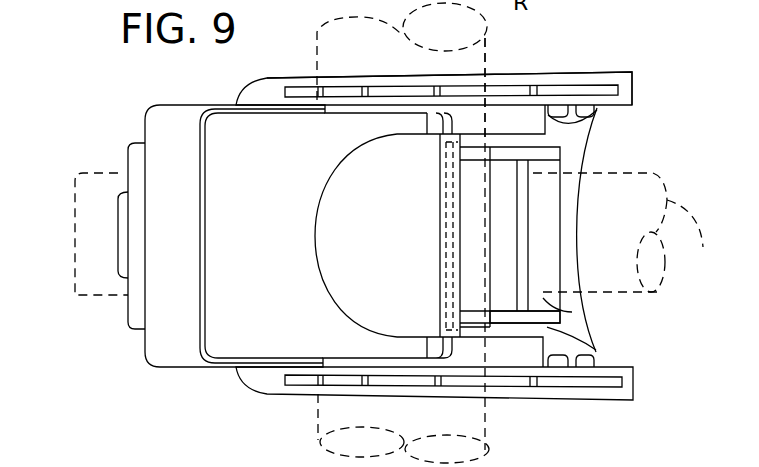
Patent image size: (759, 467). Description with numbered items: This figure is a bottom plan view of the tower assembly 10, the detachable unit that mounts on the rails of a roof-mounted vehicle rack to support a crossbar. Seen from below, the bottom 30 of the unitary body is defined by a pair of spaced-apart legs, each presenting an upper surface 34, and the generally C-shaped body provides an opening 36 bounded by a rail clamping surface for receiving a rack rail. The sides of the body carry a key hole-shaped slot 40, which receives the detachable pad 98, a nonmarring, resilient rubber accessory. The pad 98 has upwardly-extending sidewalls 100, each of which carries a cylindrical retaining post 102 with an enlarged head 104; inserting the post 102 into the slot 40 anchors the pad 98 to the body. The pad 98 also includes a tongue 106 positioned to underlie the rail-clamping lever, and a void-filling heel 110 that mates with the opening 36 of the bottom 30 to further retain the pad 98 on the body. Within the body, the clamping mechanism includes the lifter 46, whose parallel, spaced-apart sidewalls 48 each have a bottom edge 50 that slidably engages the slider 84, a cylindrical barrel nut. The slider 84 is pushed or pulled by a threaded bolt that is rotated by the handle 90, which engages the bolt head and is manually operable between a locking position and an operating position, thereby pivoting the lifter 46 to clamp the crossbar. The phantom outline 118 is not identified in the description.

The tower assembly 10 is at (103, 105).
The bottom 30 is at (272, 243).
The upper surface 34 is at (390, 125).
The opening 36 is at (317, 260).
The key hole-shaped slot 40 is at (563, 360).
The lifter 46 is at (461, 310).
The sidewalls 48 is at (593, 339).
The bottom edge 50 is at (510, 322).
The slider 84 is at (473, 332).
The handle 90 is at (130, 316).
The pad 98 is at (512, 117).
The sidewalls 100 is at (597, 76).
The retaining post 102 is at (567, 110).
The enlarged head 104 is at (598, 128).
The tongue 106 is at (520, 180).
The void-filling heel 110 is at (415, 243).
The handle (phantom) 118 is at (633, 232).